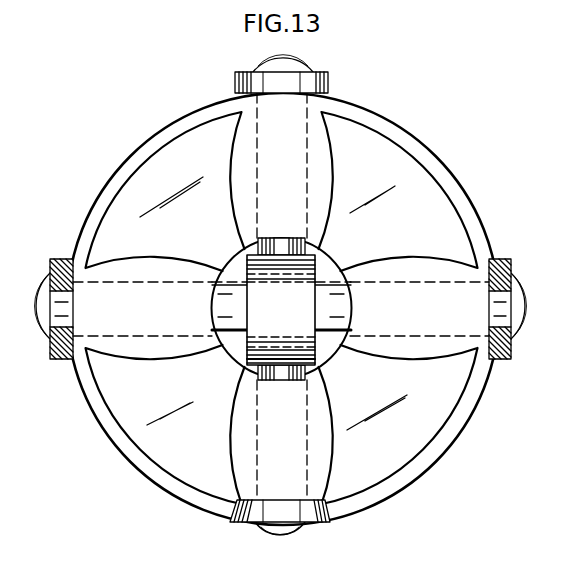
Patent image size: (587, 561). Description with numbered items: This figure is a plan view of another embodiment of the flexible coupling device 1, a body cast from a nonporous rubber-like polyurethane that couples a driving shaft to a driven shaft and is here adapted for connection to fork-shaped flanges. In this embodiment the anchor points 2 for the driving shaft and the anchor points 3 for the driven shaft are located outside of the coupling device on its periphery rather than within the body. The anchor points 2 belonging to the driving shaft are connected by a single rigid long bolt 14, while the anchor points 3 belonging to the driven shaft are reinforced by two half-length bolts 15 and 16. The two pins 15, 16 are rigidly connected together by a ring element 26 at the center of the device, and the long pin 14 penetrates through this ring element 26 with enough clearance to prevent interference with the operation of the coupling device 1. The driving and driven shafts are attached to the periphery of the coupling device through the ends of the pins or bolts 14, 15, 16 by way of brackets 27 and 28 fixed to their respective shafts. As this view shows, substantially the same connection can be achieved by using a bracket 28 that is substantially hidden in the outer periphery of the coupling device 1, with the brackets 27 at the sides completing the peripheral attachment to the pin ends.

The flexible coupling device 1 is at (433, 150).
The anchor points 2 is at (137, 242).
The anchor points 3 is at (328, 160).
The bolt 14 is at (232, 292).
The bolt 15 is at (285, 247).
The bolt 16 is at (277, 373).
The ring element 26 is at (290, 292).
The bracket 27 is at (65, 259).
The bracket 28 is at (330, 82).